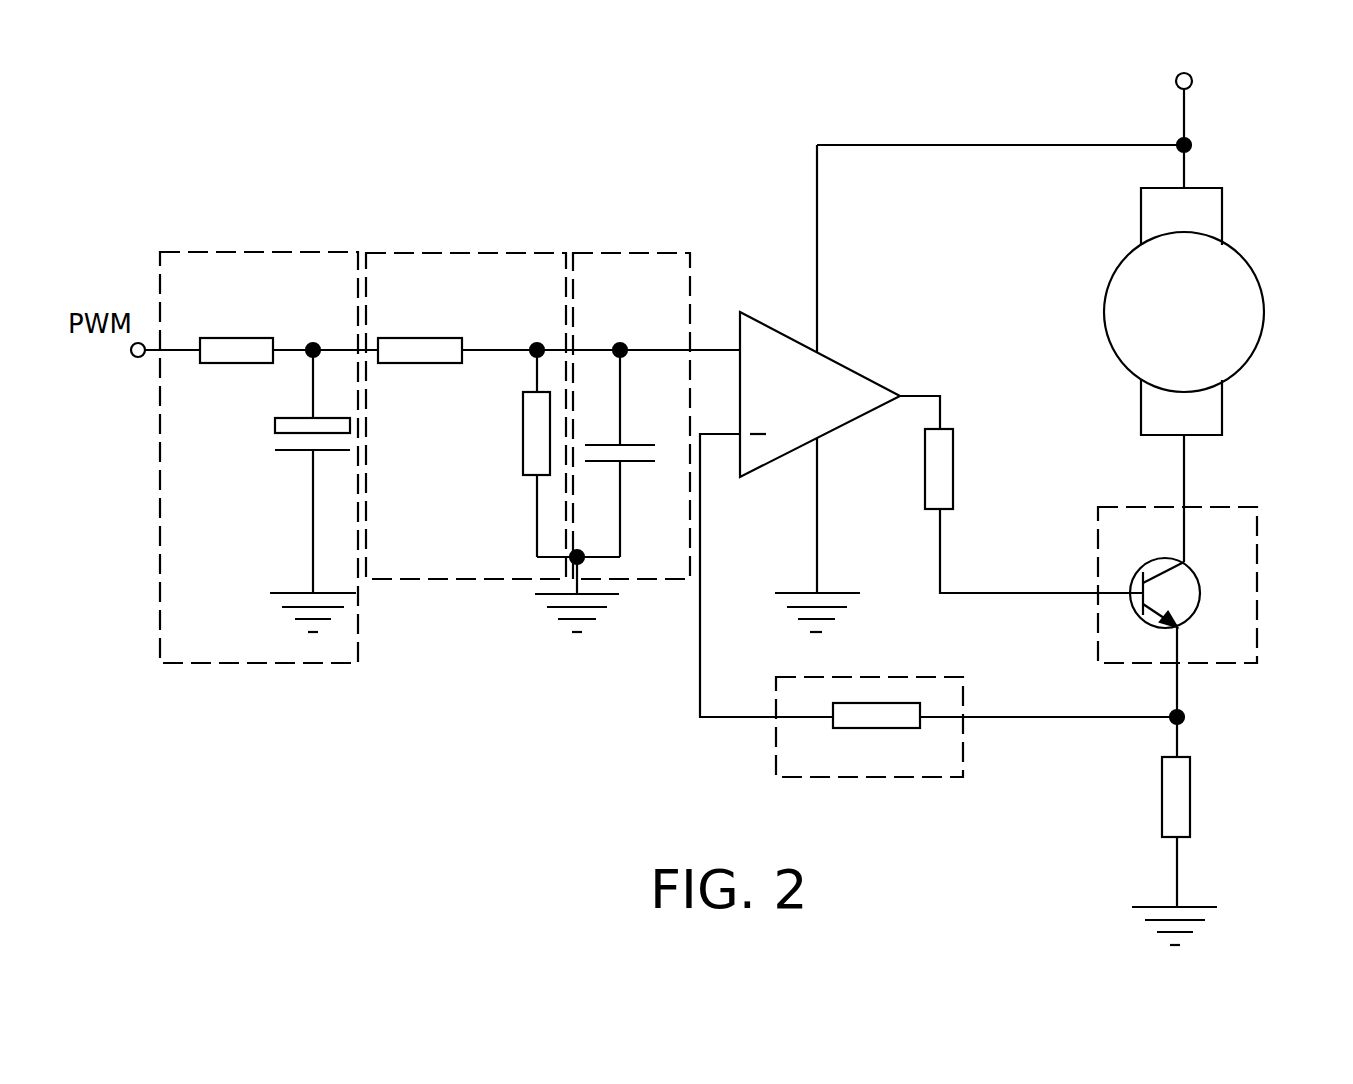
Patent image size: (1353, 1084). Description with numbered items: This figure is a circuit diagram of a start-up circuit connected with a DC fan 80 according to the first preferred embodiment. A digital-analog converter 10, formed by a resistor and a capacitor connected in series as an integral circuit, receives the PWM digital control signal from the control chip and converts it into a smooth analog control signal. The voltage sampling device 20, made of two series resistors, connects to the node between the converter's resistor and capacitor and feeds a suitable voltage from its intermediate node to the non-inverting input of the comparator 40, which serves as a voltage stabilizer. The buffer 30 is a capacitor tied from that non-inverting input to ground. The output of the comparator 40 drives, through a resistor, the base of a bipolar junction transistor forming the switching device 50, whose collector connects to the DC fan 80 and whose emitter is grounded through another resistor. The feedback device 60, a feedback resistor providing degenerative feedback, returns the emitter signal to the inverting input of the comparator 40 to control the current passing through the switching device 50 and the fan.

The digital-analog converter 10 is at (222, 252).
The voltage sampling device 20 is at (447, 252).
The buffer 30 is at (650, 252).
The comparator 40 is at (855, 370).
The switching device 50 is at (1237, 505).
The feedback device 60 is at (923, 777).
The DC fan 80 is at (1248, 257).